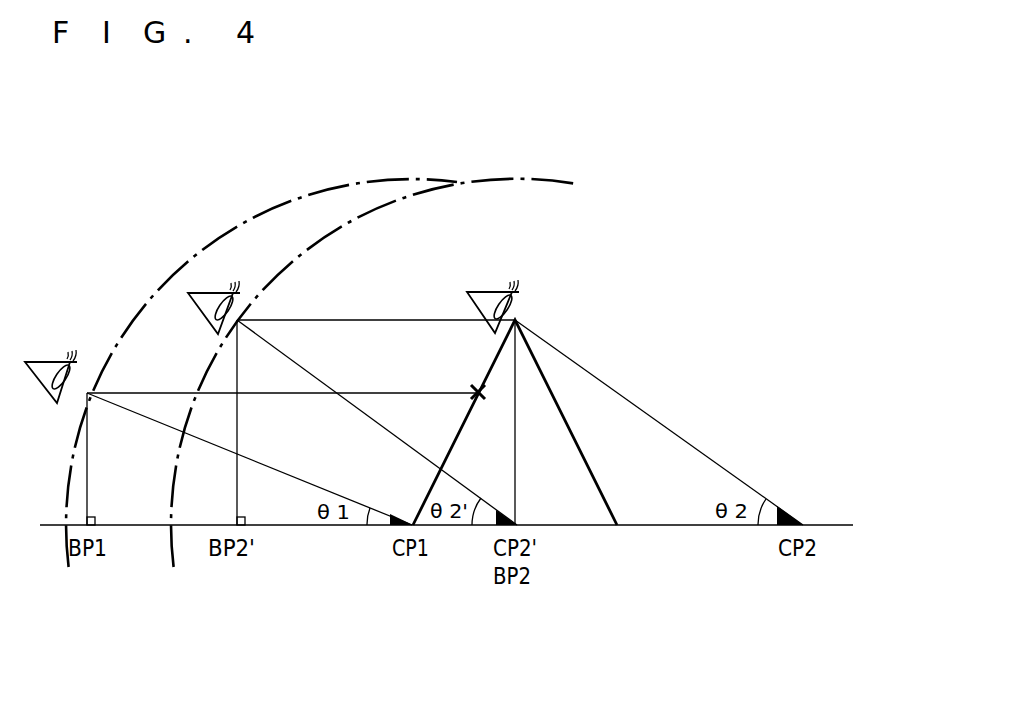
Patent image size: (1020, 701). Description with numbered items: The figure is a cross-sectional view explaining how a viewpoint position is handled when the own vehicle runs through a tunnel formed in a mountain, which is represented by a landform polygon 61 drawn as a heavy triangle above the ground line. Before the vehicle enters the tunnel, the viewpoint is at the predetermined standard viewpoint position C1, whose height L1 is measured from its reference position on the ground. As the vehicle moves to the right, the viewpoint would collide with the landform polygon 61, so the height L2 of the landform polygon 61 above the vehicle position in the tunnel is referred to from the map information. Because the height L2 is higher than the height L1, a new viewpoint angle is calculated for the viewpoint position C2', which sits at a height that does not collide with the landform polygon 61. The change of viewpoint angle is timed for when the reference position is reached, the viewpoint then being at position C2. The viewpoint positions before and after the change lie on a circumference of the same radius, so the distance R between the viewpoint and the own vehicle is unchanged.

The landform polygon 61 is at (545, 377).
The standard viewpoint position C1 is at (51, 363).
The viewpoint position C2 is at (493, 296).
The viewpoint position C2' is at (215, 293).
The height of standard viewpoint position L1 is at (88, 450).
The height of landform polygon L2 is at (515, 422).
The distance between viewpoint position and own vehicle position R is at (300, 369).